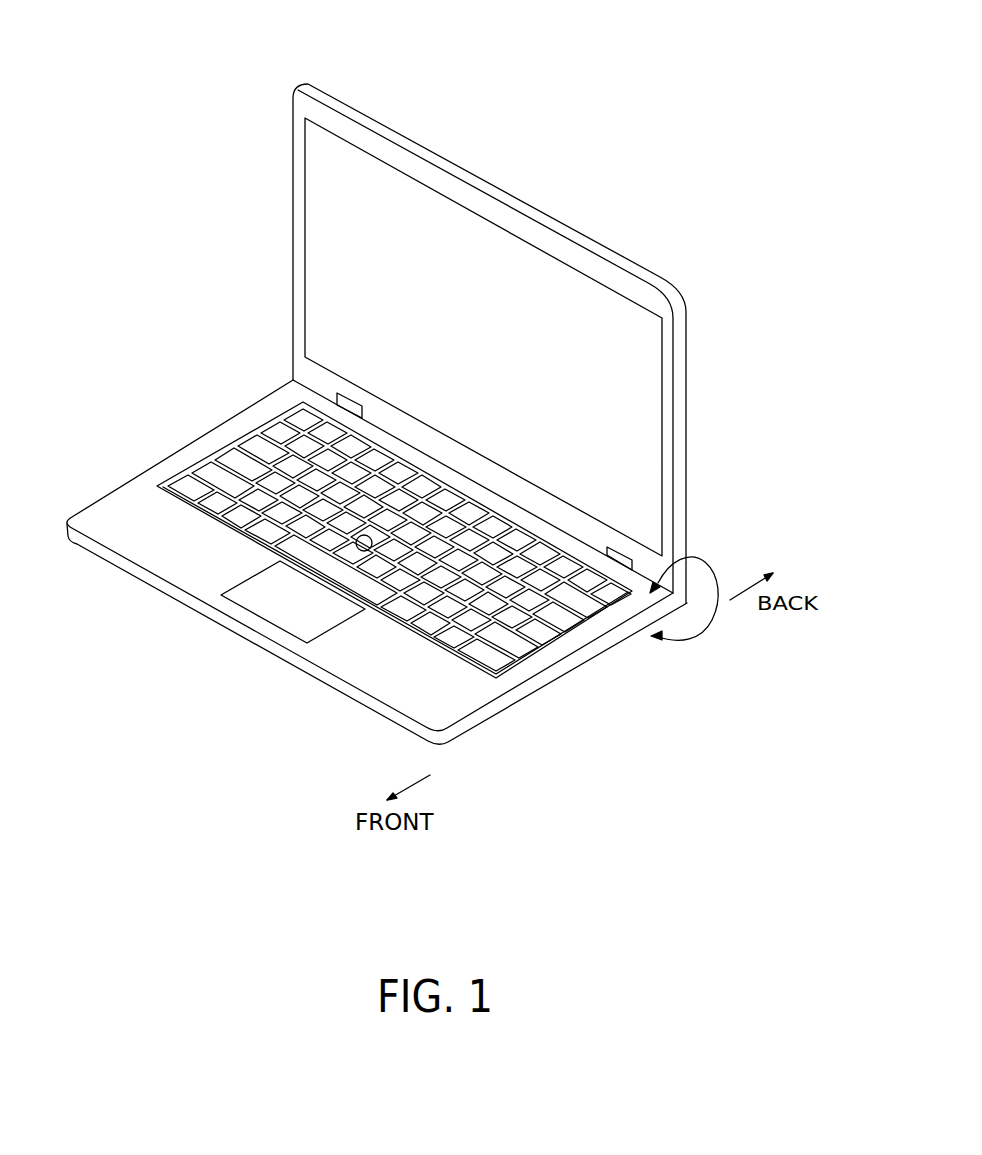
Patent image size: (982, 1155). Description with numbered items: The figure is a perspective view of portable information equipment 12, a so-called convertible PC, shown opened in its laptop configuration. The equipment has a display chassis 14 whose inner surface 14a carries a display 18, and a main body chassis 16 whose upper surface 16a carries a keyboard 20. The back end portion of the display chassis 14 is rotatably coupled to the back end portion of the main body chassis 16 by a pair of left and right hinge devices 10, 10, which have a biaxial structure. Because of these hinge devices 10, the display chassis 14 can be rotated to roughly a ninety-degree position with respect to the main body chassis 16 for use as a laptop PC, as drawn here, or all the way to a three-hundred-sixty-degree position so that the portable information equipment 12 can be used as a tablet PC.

The hinge device 10 is at (348, 396).
The portable information equipment 12 is at (234, 62).
The display chassis 14 is at (584, 234).
The inner surface 14a is at (666, 418).
The main body chassis 16 is at (117, 487).
The upper surface 16a is at (120, 540).
The display 18 is at (597, 315).
The keyboard 20 is at (233, 453).